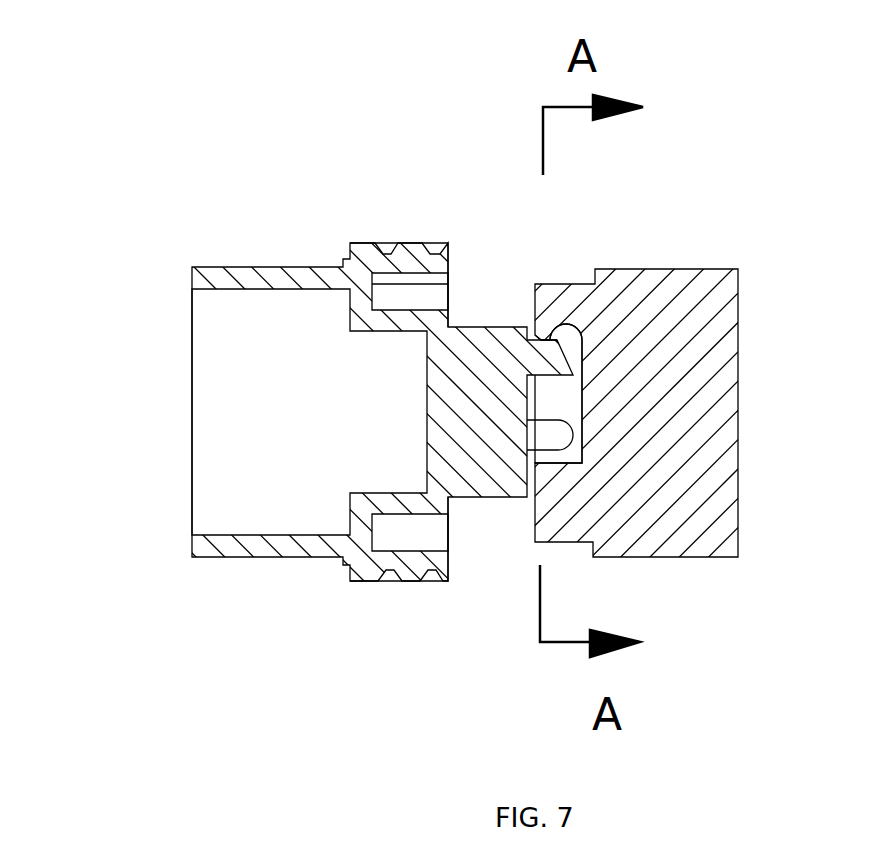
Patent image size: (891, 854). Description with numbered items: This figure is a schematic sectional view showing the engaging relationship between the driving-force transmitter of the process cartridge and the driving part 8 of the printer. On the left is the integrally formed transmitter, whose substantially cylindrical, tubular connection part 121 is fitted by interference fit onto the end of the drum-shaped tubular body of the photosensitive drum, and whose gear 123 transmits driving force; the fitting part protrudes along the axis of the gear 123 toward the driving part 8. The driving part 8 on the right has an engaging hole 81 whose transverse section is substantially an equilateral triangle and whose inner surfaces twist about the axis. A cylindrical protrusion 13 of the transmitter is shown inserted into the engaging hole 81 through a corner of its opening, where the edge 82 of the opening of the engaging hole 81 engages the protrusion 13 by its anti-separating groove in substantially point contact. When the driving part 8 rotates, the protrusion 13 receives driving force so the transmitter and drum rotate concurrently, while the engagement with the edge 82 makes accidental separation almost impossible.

The connection part 121 is at (248, 278).
The gear 123 is at (405, 262).
The driving part 8 is at (700, 405).
The engaging hole 81 is at (563, 402).
The edge of the opening of the engaging hole 82 is at (533, 337).
The protrusion 13 is at (557, 432).